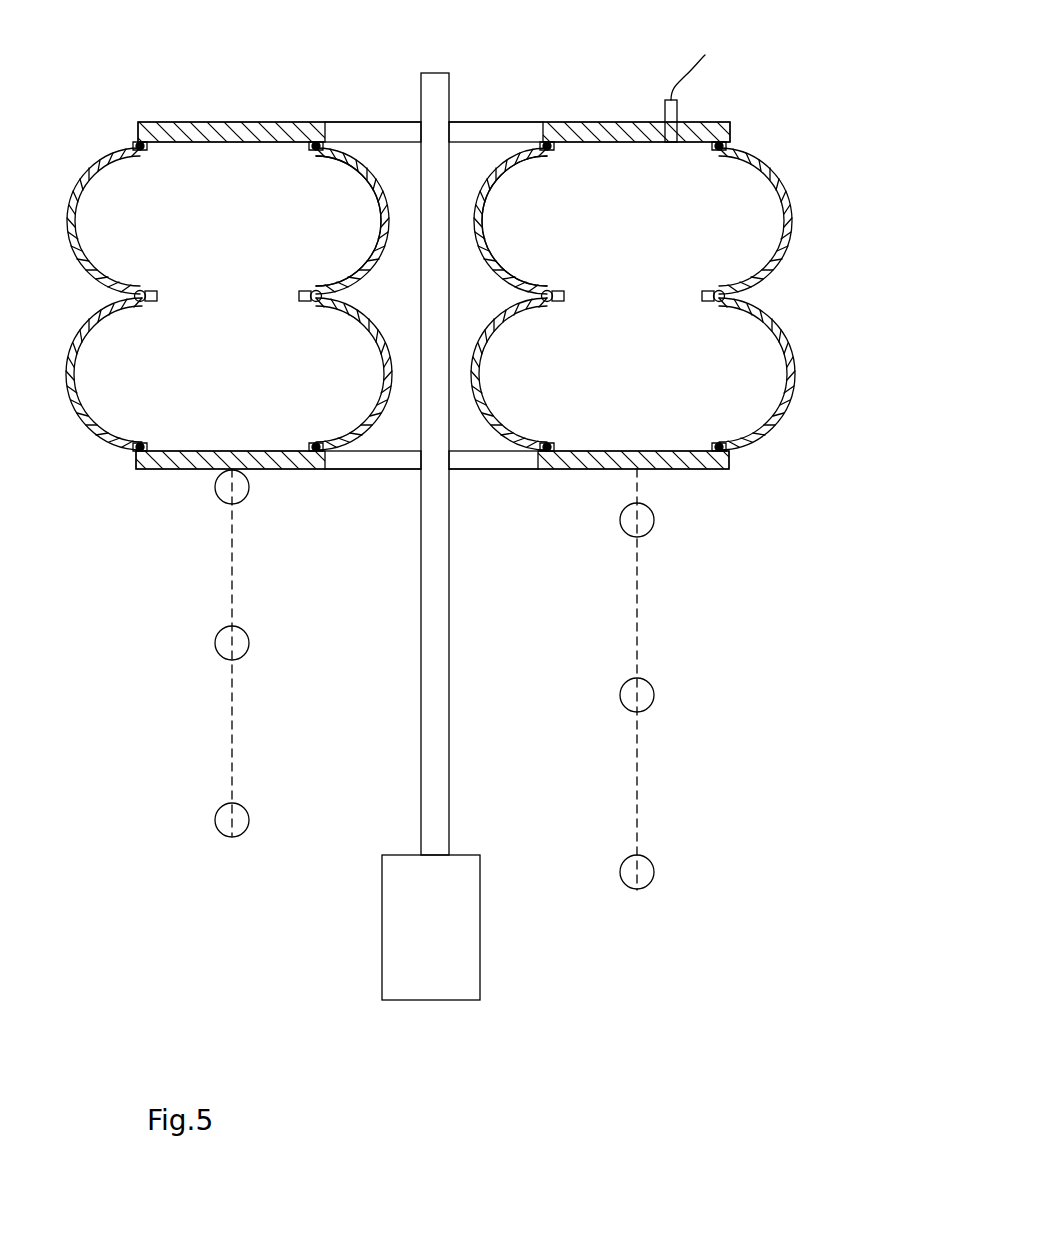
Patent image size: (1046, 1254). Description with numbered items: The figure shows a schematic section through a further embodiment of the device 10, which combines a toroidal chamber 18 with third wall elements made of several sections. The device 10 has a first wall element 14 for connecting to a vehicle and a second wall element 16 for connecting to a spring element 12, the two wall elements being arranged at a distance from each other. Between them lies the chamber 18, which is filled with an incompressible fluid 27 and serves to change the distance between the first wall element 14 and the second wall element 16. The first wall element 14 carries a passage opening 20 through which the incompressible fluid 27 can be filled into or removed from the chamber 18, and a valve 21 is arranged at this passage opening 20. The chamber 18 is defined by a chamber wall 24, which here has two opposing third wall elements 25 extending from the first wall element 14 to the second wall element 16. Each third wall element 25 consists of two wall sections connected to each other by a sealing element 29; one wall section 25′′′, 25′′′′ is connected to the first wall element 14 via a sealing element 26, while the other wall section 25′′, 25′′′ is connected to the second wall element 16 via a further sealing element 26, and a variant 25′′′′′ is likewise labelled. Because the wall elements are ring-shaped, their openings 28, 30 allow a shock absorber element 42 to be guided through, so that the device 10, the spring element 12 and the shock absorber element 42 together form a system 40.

The device 10 is at (847, 167).
The spring element 12 is at (650, 537).
The first wall element 14 is at (585, 128).
The second wall element 16 is at (686, 468).
The chamber 18 is at (128, 410).
The passage opening 20 is at (671, 130).
The valve 21 is at (683, 104).
The chamber wall 24 is at (85, 257).
The third wall element 25 is at (70, 200).
The wall section 25′′ is at (70, 367).
The wall section 25′′′ is at (70, 232).
The wall section 25′′′′ is at (383, 198).
The membrane wall 25′′′′′ is at (794, 208).
The sealing element 26 is at (141, 136).
The incompressible fluid 27 is at (244, 302).
The opening 28 is at (497, 128).
The sealing element 29 is at (143, 290).
The opening 30 is at (500, 464).
The system 40 is at (716, 913).
The shock absorber element 42 is at (462, 932).